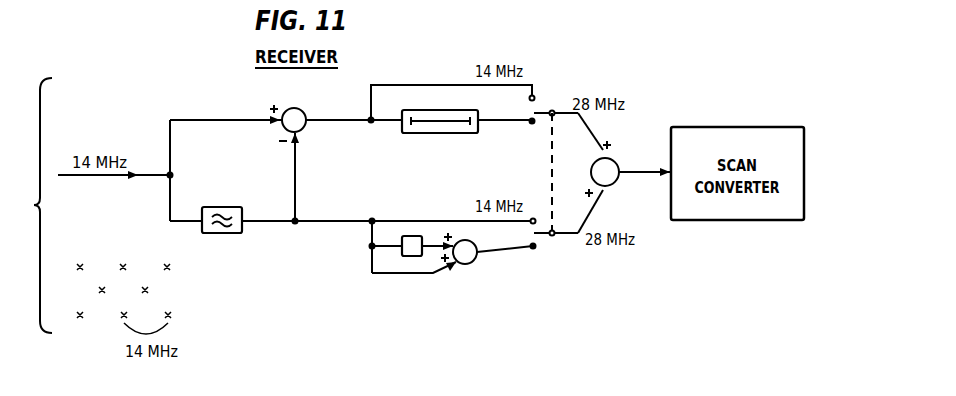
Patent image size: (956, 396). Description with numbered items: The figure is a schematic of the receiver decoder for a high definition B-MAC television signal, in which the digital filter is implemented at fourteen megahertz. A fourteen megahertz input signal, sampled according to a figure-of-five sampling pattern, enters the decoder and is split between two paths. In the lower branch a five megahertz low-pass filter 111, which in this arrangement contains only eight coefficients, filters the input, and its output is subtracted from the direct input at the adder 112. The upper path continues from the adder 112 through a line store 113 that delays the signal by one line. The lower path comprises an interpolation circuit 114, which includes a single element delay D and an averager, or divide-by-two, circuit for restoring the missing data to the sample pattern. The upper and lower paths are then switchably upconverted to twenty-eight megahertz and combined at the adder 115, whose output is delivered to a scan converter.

The low-pass filter 111 is at (242, 231).
The adder 112 is at (303, 112).
The line store 113 is at (478, 131).
The interpolation circuit 114 is at (527, 257).
The adder 115 is at (615, 161).